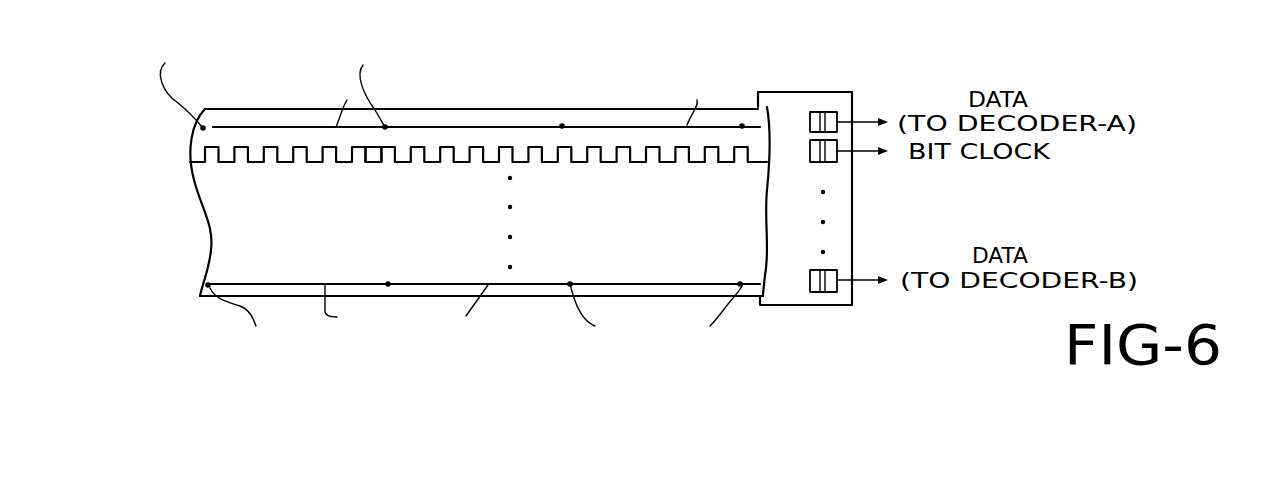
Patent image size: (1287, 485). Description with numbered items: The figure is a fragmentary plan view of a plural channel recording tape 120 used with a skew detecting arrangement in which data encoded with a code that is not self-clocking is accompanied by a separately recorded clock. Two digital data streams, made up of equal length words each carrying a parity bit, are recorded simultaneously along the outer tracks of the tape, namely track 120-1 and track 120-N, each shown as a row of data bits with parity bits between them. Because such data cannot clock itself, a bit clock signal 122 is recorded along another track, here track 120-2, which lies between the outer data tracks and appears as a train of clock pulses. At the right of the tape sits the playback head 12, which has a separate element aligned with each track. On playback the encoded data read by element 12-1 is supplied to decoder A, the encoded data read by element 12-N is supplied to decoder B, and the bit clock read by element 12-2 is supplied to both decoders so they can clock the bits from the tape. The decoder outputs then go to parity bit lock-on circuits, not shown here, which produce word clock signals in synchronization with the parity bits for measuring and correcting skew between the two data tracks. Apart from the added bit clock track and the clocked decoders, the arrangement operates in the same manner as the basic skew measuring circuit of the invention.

The playback head 12 is at (826, 92).
The playback head element 12-1 is at (838, 112).
The playback head element 12-2 is at (837, 162).
The playback head element 12-N is at (837, 292).
The tape 120 is at (509, 108).
The track 120-1 is at (200, 127).
The track 120-2 is at (192, 158).
The track 120-N is at (200, 286).
The bit clock signal 122 is at (377, 162).